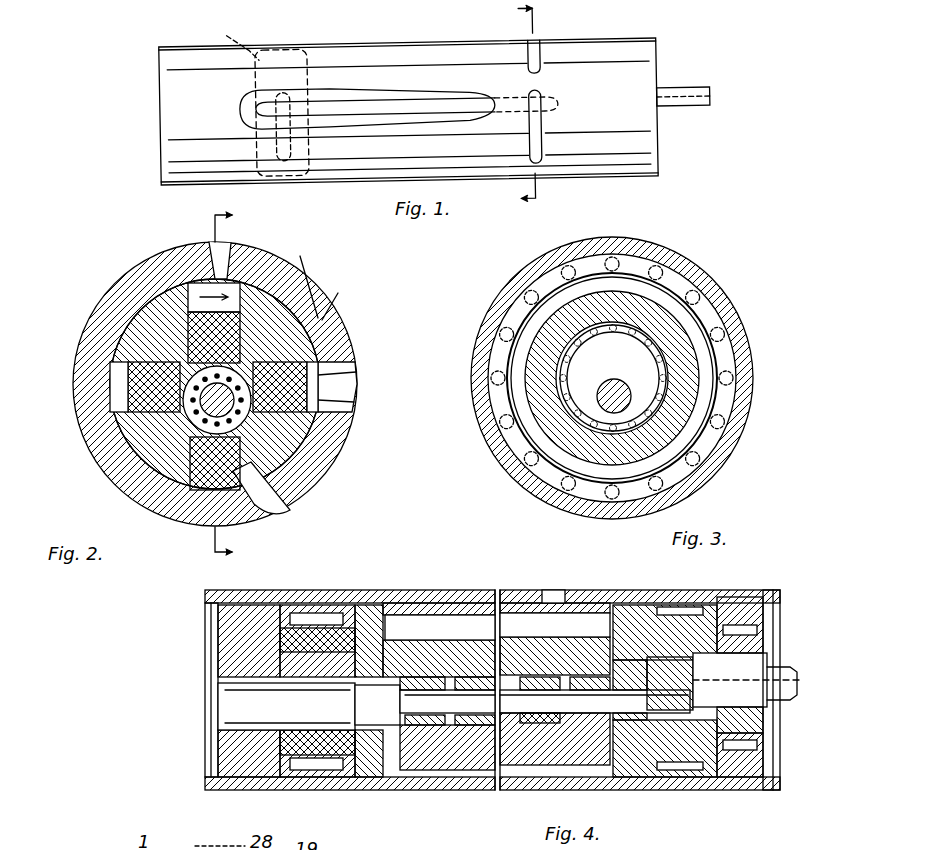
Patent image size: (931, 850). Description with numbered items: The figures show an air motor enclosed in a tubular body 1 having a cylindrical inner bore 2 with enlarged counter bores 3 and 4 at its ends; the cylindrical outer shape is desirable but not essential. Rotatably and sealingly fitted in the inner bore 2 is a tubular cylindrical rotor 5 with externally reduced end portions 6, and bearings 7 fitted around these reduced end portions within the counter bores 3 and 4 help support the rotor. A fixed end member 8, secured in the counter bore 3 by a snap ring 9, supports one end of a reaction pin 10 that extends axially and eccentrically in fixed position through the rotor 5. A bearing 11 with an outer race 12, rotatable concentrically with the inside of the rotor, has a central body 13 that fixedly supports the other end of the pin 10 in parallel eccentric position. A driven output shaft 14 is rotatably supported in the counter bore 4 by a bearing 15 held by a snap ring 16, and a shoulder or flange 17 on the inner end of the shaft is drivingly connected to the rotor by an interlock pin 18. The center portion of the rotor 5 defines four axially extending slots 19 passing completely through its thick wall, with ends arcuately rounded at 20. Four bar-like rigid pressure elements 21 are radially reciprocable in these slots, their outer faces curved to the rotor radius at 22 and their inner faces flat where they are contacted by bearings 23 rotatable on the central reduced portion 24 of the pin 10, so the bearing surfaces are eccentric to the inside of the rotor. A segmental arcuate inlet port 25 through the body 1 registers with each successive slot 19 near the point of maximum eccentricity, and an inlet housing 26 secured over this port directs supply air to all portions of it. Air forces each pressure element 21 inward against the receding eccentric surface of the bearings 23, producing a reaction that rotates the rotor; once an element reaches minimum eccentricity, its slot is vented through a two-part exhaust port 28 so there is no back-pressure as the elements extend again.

In FIG. 1, the tubular body 1 is at (170, 147).
In FIG. 2, the tubular body 1 is at (82, 347).
In FIG. 3, the tubular body 1 is at (488, 374).
In FIG. 4, the tubular body 1 is at (440, 600).
In FIG. 1, the cylindrical inner bore 2 is at (516, 105).
In FIG. 2, the cylindrical inner bore 2 is at (112, 390).
In FIG. 4, the cylindrical inner bore 2 is at (452, 640).
In FIG. 4, the counter bore 3 is at (302, 610).
In FIG. 2, the counter bore 4 is at (231, 386).
In FIG. 3, the counter bore 4 is at (489, 388).
In FIG. 4, the counter bore 4 is at (736, 604).
In FIG. 1, the tubular cylindrical rotor 5 is at (282, 44).
In FIG. 2, the tubular cylindrical rotor 5 is at (285, 316).
In FIG. 3, the tubular cylindrical rotor 5 is at (526, 407).
In FIG. 4, the tubular cylindrical rotor 5 is at (372, 612).
In FIG. 3, the reduced end portions 6 is at (578, 304).
In FIG. 4, the reduced end portions 6 is at (322, 762).
In FIG. 3, the bearings 7 is at (590, 274).
In FIG. 4, the bearings 7 is at (336, 768).
In FIG. 4, the fixed end member 8 is at (255, 630).
In FIG. 4, the snap ring 9 is at (208, 620).
In FIG. 4, the reaction pin 10 is at (235, 705).
In FIG. 3, the bearing 11 is at (552, 355).
In FIG. 4, the bearing 11 is at (695, 618).
In FIG. 3, the outer race 12 is at (560, 363).
In FIG. 4, the outer race 12 is at (655, 625).
In FIG. 3, the central body 13 is at (556, 314).
In FIG. 4, the central body 13 is at (672, 680).
In FIG. 1, the driven output shaft 14 is at (683, 105).
In FIG. 4, the driven output shaft 14 is at (780, 675).
In FIG. 4, the bearing 15 is at (746, 752).
In FIG. 4, the snap ring 16 is at (769, 612).
In FIG. 4, the shoulder or flange 17 is at (708, 740).
In FIG. 3, the interlock pin 18 is at (522, 472).
In FIG. 4, the interlock pin 18 is at (722, 722).
In FIG. 2, the axially extending slots 19 is at (225, 292).
In FIG. 4, the axially extending slots 19 is at (466, 626).
In FIG. 1, the arcuately rounded slot ends 20 is at (262, 112).
In FIG. 1, the pressure elements 21 is at (415, 110).
In FIG. 2, the pressure elements 21 is at (305, 380).
In FIG. 4, the pressure elements 21 is at (402, 640).
In FIG. 2, the transversely curved outer faces 22 is at (118, 398).
In FIG. 2, the bearings 23 is at (196, 412).
In FIG. 4, the bearings 23 is at (420, 726).
In FIG. 2, the central reduced portion 24 is at (208, 410).
In FIG. 3, the central reduced portion 24 is at (606, 402).
In FIG. 4, the central reduced portion 24 is at (466, 716).
In FIG. 1, the inlet port 25 is at (290, 139).
In FIG. 1, the inlet housing 26 is at (224, 37).
In FIG. 1, the exhaust port 28 is at (541, 70).
In FIG. 2, the exhaust port 28 is at (286, 276).
In FIG. 4, the exhaust port 28 is at (556, 598).